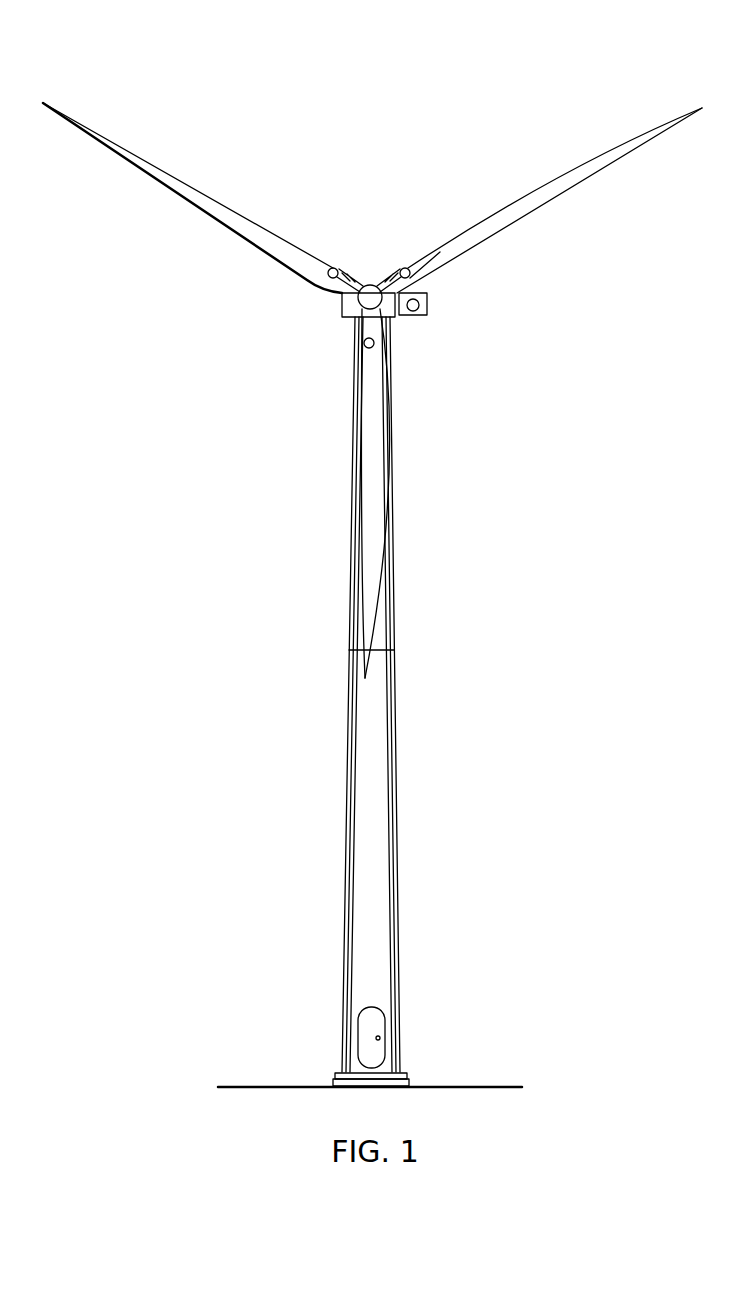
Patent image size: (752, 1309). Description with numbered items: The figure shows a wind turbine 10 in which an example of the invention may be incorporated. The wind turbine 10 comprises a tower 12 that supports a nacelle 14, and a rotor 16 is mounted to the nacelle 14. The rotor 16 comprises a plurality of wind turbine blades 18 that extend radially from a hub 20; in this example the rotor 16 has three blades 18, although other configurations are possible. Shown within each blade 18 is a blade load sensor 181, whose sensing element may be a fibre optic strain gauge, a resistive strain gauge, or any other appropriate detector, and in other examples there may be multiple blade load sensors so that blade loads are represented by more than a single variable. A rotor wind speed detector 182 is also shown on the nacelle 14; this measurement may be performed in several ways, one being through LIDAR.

The wind turbine 10 is at (602, 87).
The tower 12 is at (382, 748).
The nacelle 14 is at (400, 317).
The rotor 16 is at (318, 328).
The wind turbine blade 18 is at (270, 233).
The blade load sensor 181 is at (338, 268).
The rotor wind speed detector 182 is at (428, 293).
The hub 20 is at (363, 291).